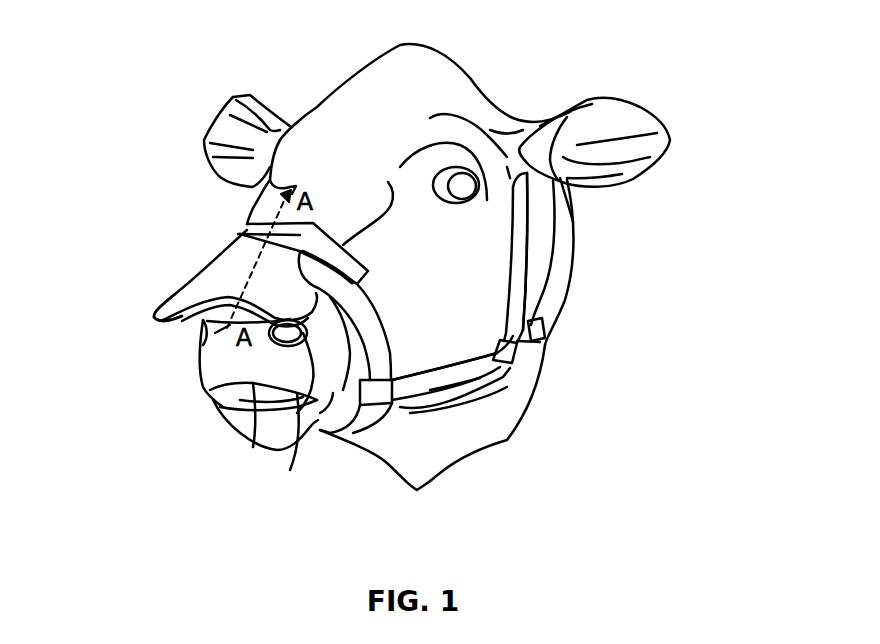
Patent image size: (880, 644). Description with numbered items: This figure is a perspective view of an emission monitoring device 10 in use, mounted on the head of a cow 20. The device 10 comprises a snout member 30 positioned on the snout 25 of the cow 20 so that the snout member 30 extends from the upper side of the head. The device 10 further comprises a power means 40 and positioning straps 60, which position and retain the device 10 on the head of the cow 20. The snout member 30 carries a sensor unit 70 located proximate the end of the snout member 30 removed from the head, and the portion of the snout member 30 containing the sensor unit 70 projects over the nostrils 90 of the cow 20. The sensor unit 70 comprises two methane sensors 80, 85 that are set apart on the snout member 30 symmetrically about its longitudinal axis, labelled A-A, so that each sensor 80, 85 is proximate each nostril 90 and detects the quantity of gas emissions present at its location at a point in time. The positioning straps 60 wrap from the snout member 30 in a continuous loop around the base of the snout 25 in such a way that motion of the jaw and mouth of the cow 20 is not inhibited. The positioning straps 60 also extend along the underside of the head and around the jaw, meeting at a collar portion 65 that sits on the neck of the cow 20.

The emission monitoring device 10 is at (660, 273).
The cow 20 is at (450, 72).
The snout 25 is at (345, 372).
The snout member 30 is at (257, 262).
The power means 40 is at (567, 227).
The positioning straps 60 is at (492, 393).
The collar portion 65 is at (535, 340).
The sensor unit 70 is at (133, 311).
The methane sensor 80 is at (298, 347).
The methane sensor 85 is at (157, 321).
The nostrils 90 is at (281, 340).